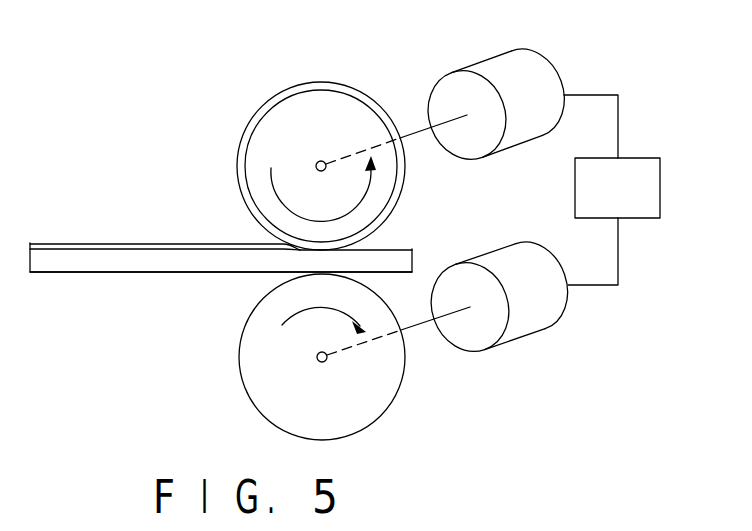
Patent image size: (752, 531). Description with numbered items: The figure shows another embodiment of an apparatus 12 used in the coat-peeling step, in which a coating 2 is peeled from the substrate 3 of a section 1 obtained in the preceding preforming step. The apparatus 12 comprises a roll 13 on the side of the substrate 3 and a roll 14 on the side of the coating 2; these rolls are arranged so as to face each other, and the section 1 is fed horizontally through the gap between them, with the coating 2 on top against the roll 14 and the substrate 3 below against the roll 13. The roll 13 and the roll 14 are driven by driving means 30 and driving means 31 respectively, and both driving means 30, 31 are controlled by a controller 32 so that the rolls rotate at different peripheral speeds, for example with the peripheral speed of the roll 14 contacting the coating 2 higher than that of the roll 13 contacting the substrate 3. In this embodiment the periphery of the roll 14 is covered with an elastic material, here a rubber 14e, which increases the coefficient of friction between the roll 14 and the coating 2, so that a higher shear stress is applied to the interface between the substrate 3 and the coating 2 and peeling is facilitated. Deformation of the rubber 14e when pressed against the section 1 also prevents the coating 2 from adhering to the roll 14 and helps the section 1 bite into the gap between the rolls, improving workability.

The section 1 is at (221, 255).
The coating 2 is at (97, 245).
The substrate 3 is at (77, 271).
The apparatus 12 is at (216, 93).
The roll on the side of the substrate 13 is at (405, 366).
The roll on the side of the coating 14 is at (357, 146).
The rubber 14e is at (400, 185).
The driving means 30 is at (530, 328).
The driving means 31 is at (495, 62).
The controller 32 is at (638, 220).